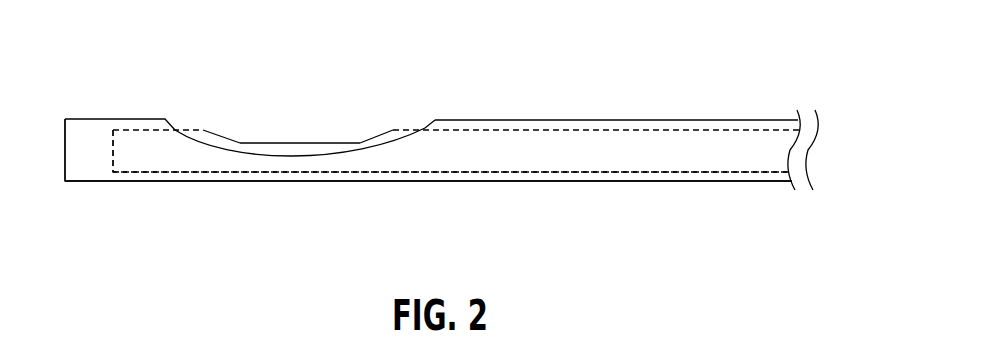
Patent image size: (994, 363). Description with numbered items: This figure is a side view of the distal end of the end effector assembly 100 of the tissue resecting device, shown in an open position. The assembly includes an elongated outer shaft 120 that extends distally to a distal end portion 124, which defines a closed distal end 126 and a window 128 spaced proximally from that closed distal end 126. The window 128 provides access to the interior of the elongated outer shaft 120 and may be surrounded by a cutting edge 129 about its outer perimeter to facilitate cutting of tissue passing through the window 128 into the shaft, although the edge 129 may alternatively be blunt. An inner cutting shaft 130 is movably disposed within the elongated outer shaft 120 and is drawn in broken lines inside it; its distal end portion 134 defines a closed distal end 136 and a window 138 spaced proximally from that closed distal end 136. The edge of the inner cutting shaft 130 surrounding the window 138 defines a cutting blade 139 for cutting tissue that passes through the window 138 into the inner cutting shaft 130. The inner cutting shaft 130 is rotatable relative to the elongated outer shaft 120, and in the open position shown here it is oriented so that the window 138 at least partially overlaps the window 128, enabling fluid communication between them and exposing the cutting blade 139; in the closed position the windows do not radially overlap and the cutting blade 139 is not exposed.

The end effector assembly 100 is at (618, 62).
The elongated outer shaft 120 is at (678, 181).
The distal end portion 124 is at (120, 118).
The closed distal end 126 is at (65, 152).
The window 128 is at (407, 133).
The cutting edge 129 is at (260, 157).
The inner cutting shaft 130 is at (542, 172).
The distal end portion 134 is at (159, 172).
The closed distal end 136 is at (113, 150).
The window 138 is at (328, 143).
The cutting blade 139 is at (242, 143).